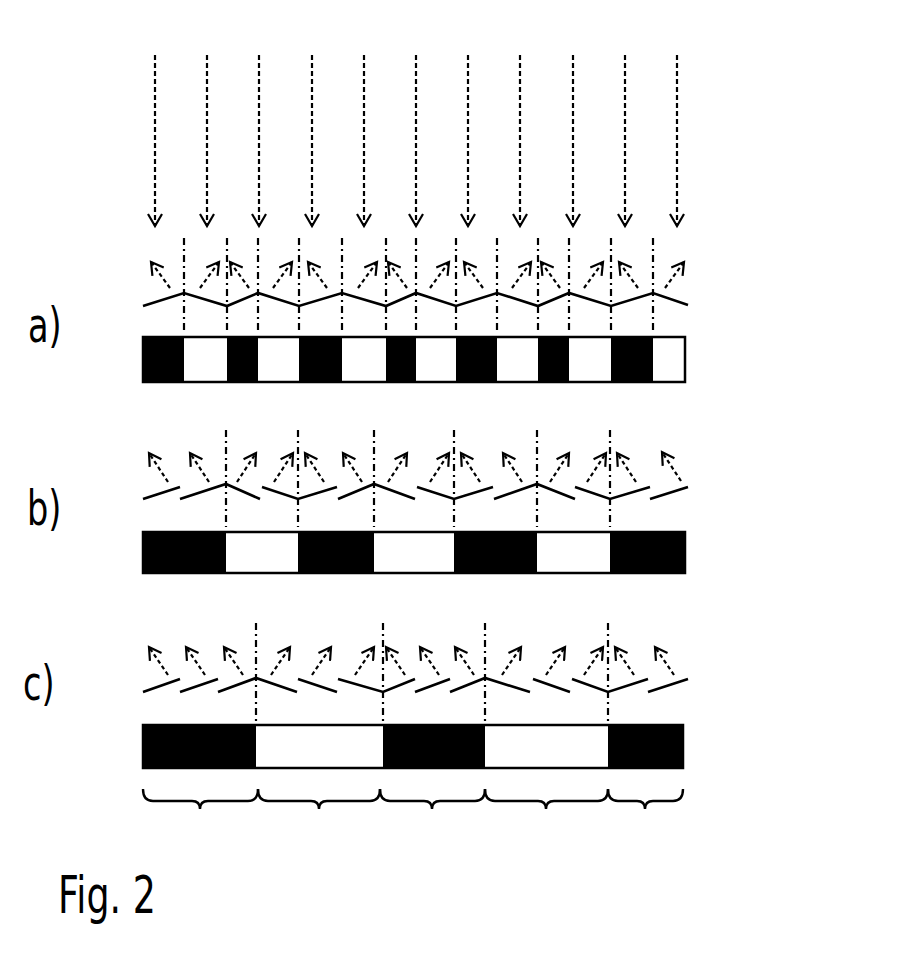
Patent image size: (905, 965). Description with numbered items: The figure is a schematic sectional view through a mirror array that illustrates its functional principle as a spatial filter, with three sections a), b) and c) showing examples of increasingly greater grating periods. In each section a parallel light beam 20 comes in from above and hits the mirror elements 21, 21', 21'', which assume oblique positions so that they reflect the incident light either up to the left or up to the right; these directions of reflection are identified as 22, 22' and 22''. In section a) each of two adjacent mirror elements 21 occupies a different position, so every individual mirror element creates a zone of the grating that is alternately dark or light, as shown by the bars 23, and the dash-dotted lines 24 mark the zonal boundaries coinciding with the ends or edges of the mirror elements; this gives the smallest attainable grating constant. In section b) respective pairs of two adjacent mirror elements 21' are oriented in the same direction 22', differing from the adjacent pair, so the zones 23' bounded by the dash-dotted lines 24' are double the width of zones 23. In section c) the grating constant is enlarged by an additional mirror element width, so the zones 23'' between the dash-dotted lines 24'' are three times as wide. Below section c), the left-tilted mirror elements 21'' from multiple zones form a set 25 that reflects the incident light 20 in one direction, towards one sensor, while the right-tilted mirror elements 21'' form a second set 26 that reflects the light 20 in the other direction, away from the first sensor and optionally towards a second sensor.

The parallel light beam 20 is at (677, 127).
The mirror elements 21 is at (479, 268).
The directions of reflection 22 is at (487, 221).
The zones of the grating 23 is at (484, 344).
The dash-dotted lines 24 is at (348, 263).
The mirror elements 21' is at (498, 518).
The direction of reflection 22' is at (495, 446).
The zones of the grating structure 23' is at (498, 568).
The dash-dotted lines 24' is at (532, 447).
The mirror elements 21'' is at (498, 700).
The directions of reflection 22'' is at (505, 658).
The zones of the grating structure 23'' is at (495, 756).
The dash-dotted lines 24'' is at (559, 655).
The set of mirror elements 25 is at (413, 829).
The second set of mirror elements 26 is at (433, 829).